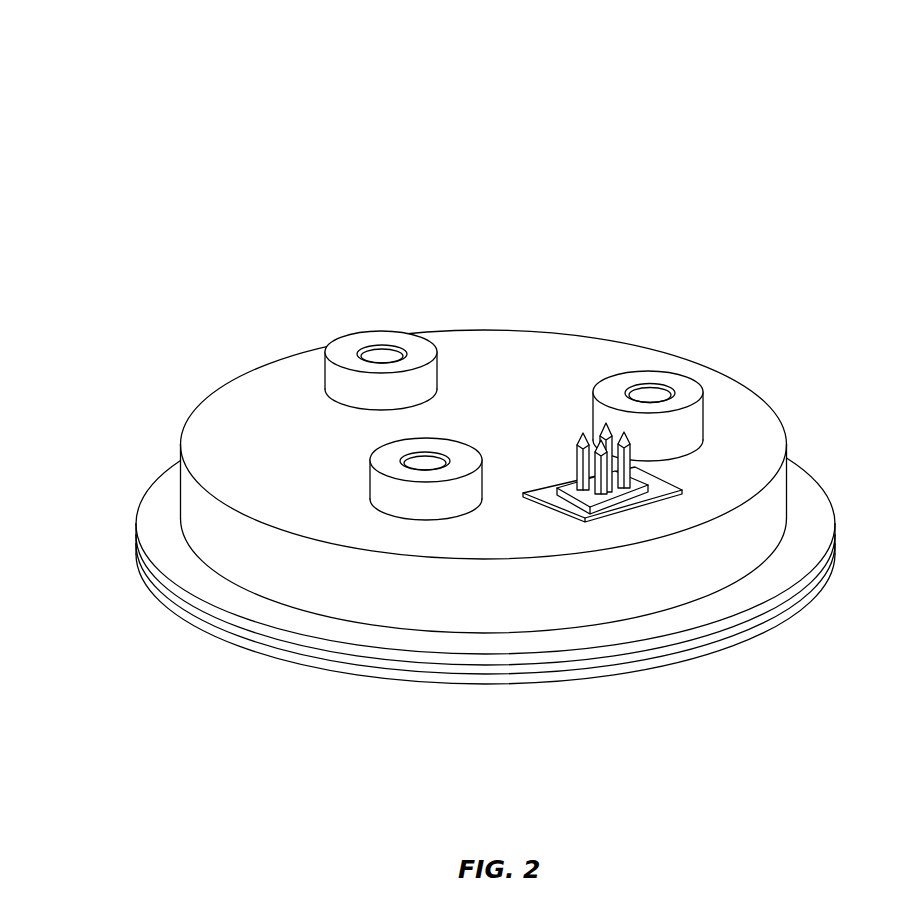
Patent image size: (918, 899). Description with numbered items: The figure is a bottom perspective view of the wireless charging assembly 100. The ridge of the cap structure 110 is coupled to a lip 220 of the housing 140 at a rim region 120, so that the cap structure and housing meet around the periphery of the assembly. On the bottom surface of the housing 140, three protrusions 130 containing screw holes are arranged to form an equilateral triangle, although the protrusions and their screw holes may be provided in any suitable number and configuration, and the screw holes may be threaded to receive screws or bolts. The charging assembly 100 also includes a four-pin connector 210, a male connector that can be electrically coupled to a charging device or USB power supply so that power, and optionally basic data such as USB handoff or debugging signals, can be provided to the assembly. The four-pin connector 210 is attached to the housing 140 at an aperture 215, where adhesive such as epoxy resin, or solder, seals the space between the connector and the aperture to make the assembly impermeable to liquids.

The wireless charging assembly 100 is at (689, 65).
The cap structure 110 is at (390, 676).
The rim region 120 is at (137, 551).
The protrusions 130 is at (380, 331).
The housing 140 is at (298, 407).
The four-pin connector 210 is at (632, 460).
The aperture 215 is at (633, 495).
The lip 220 is at (811, 497).